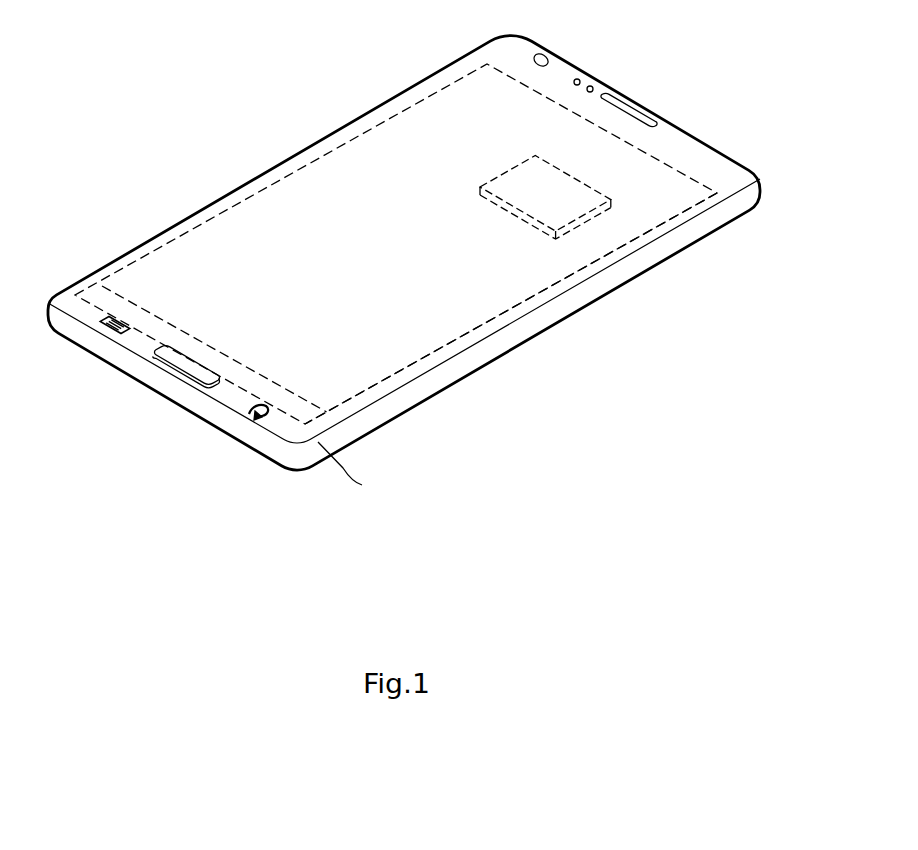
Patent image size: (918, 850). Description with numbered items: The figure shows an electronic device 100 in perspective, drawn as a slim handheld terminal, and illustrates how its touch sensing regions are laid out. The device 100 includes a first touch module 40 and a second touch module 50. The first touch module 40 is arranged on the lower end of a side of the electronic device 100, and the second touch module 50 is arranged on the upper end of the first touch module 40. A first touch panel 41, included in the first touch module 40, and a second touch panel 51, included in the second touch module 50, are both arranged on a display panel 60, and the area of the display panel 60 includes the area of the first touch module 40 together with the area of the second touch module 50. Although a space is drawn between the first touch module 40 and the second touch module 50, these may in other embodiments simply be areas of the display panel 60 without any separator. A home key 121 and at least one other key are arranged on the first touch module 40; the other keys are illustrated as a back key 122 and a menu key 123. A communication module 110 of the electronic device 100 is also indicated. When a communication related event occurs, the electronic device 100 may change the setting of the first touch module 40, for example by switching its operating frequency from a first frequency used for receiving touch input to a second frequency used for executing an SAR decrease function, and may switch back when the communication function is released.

The electronic device 100 is at (649, 73).
The first touch module 40 is at (75, 295).
The first touch panel 41 is at (354, 472).
The second touch module 50 is at (293, 172).
The second touch panel 51 is at (525, 288).
The display panel 60 is at (265, 98).
The communication module 110 is at (573, 211).
The home key 121 is at (183, 370).
The back key 122 is at (250, 416).
The menu key 123 is at (106, 328).